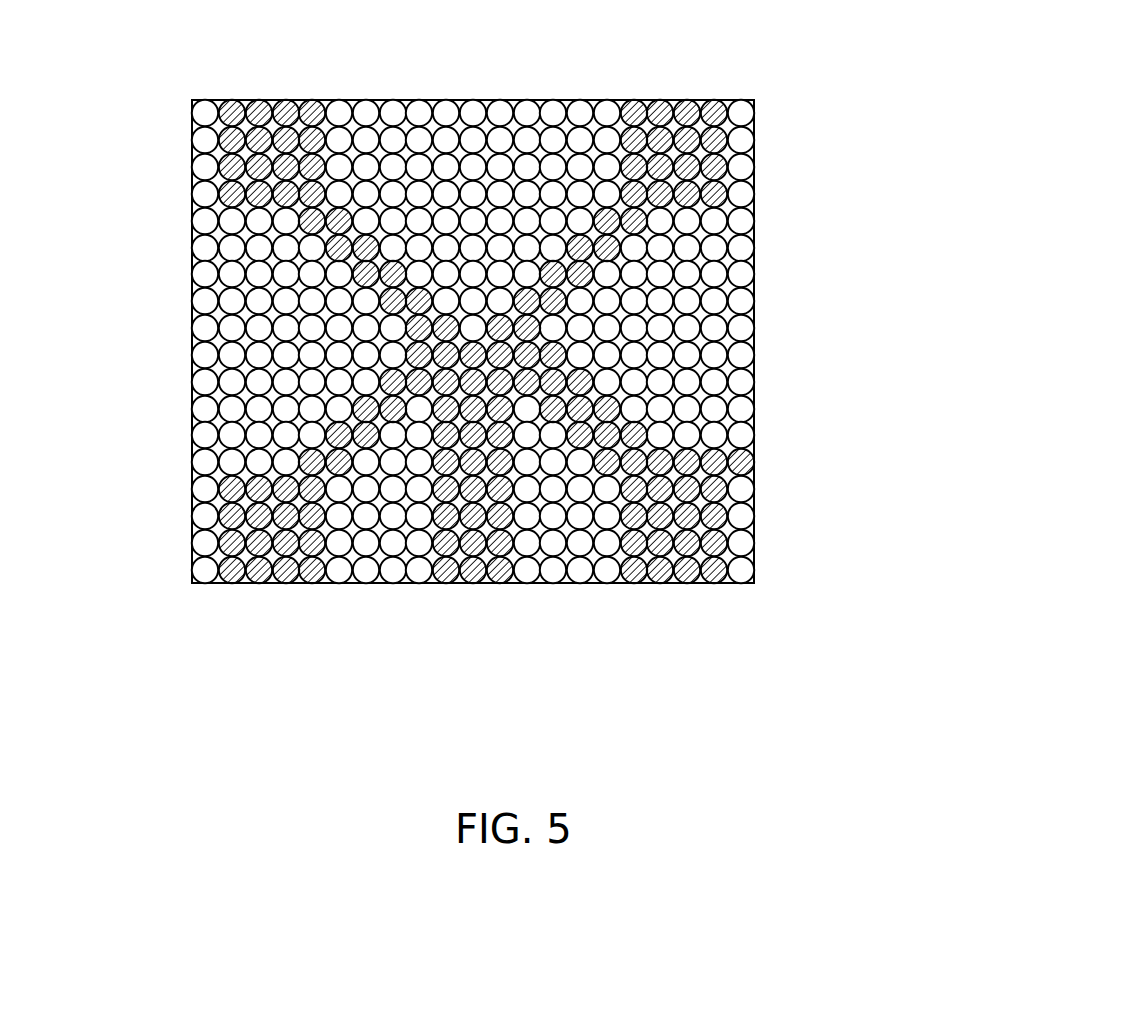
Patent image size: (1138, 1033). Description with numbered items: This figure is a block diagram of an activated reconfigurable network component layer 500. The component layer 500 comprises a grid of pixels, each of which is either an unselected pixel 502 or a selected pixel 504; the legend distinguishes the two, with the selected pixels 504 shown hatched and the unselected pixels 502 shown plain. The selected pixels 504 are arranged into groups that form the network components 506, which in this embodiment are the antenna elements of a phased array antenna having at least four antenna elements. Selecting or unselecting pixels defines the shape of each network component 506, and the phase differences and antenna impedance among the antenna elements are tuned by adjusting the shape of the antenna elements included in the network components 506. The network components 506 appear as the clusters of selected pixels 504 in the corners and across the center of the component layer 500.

The component layer 500 is at (819, 70).
The unselected pixel 502 is at (213, 99).
The selected pixel 504 is at (237, 99).
The network component 506 is at (458, 590).